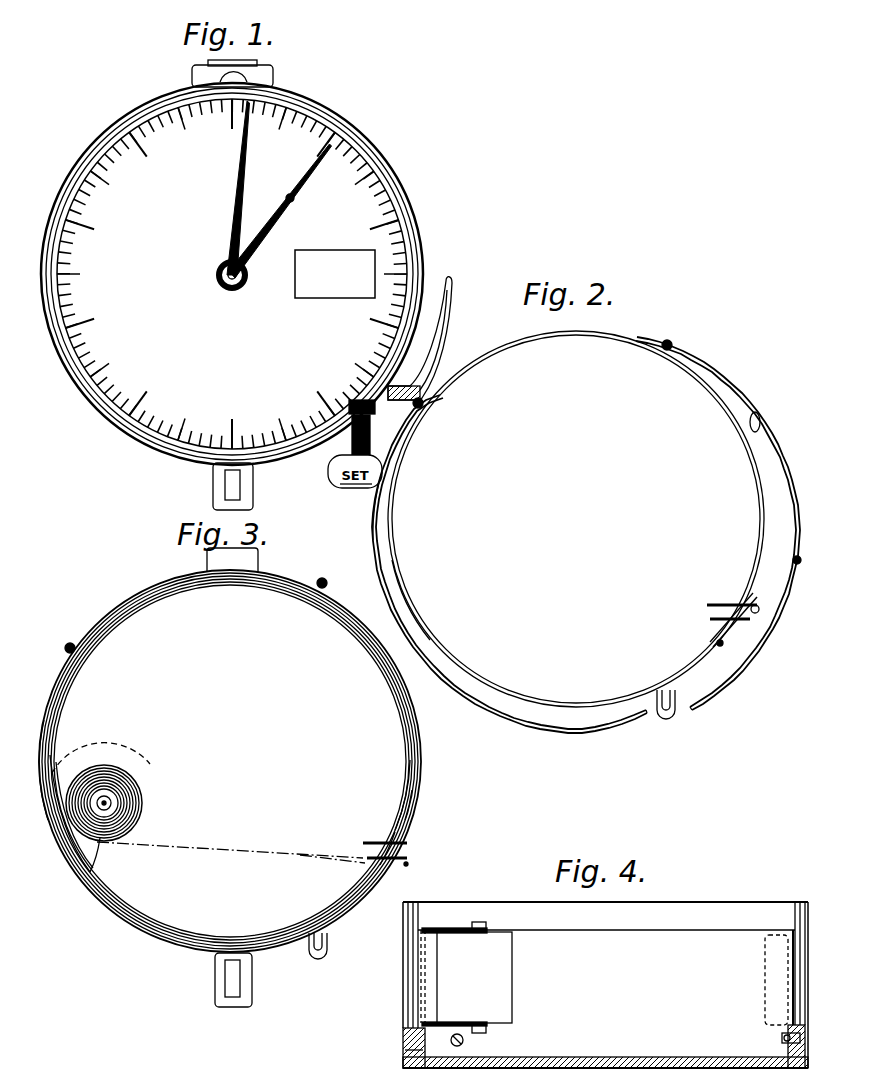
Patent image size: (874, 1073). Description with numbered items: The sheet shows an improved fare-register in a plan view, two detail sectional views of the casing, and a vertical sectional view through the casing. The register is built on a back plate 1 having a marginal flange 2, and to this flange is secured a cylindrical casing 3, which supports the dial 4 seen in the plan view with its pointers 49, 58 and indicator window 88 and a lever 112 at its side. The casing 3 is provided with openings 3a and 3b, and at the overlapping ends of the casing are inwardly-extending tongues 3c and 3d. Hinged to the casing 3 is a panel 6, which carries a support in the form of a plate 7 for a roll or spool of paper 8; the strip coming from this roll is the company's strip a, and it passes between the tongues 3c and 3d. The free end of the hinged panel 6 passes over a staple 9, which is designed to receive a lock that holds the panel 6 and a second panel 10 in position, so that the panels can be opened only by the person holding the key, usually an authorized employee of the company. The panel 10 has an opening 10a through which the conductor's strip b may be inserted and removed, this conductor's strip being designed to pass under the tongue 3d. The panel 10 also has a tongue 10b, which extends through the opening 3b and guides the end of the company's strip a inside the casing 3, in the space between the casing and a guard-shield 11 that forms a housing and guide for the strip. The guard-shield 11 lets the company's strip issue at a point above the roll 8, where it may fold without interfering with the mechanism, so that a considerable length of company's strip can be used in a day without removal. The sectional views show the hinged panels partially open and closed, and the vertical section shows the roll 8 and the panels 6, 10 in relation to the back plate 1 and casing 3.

In FIG. 4, the back plate 1 is at (560, 1062).
In FIG. 4, the marginal flange 2 is at (404, 1047).
In FIG. 2, the cylindrical casing 3 is at (548, 334).
In FIG. 3, the cylindrical casing 3 is at (227, 574).
In FIG. 4, the cylindrical casing 3 is at (665, 912).
In FIG. 2, the opening 3a is at (407, 595).
In FIG. 3, the opening 3a is at (77, 780).
In FIG. 4, the opening 3a is at (423, 927).
In FIG. 2, the opening 3b is at (757, 478).
In FIG. 3, the opening 3b is at (420, 784).
In FIG. 4, the opening 3b is at (795, 920).
In FIG. 2, the inwardly-extending tongue 3c is at (718, 602).
In FIG. 3, the inwardly-extending tongue 3c is at (368, 841).
In FIG. 2, the inwardly-extending tongue 3d is at (710, 620).
In FIG. 3, the inwardly-extending tongue 3d is at (368, 861).
In FIG. 1, the dial 4 is at (232, 274).
In FIG. 2, the hinged panel 6 is at (372, 537).
In FIG. 3, the hinged panel 6 is at (46, 812).
In FIG. 4, the hinged panel 6 is at (408, 958).
In FIG. 3, the plate 7 is at (60, 848).
In FIG. 4, the plate 7 is at (425, 977).
In FIG. 3, the roll of paper 8 is at (136, 792).
In FIG. 4, the roll of paper 8 is at (495, 987).
In FIG. 3, the staple 9 is at (318, 956).
In FIG. 2, the panel 10 is at (760, 657).
In FIG. 3, the panel 10 is at (428, 790).
In FIG. 4, the panel 10 is at (805, 1003).
In FIG. 2, the opening 10a is at (790, 612).
In FIG. 3, the opening 10a is at (410, 853).
In FIG. 2, the tongue 10b is at (754, 411).
In FIG. 4, the tongue 10b is at (802, 955).
In FIG. 3, the guard-shield 11 is at (290, 578).
In FIG. 4, the guard-shield 11 is at (558, 945).
In FIG. 1, the pointer 49 is at (248, 198).
In FIG. 1, the second pointer 58 is at (285, 210).
In FIG. 1, the indicator window 88 is at (306, 278).
In FIG. 1, the lever 112 is at (452, 322).
In FIG. 3, the company's strip a is at (199, 847).
In FIG. 3, the conductor's strip b is at (408, 864).